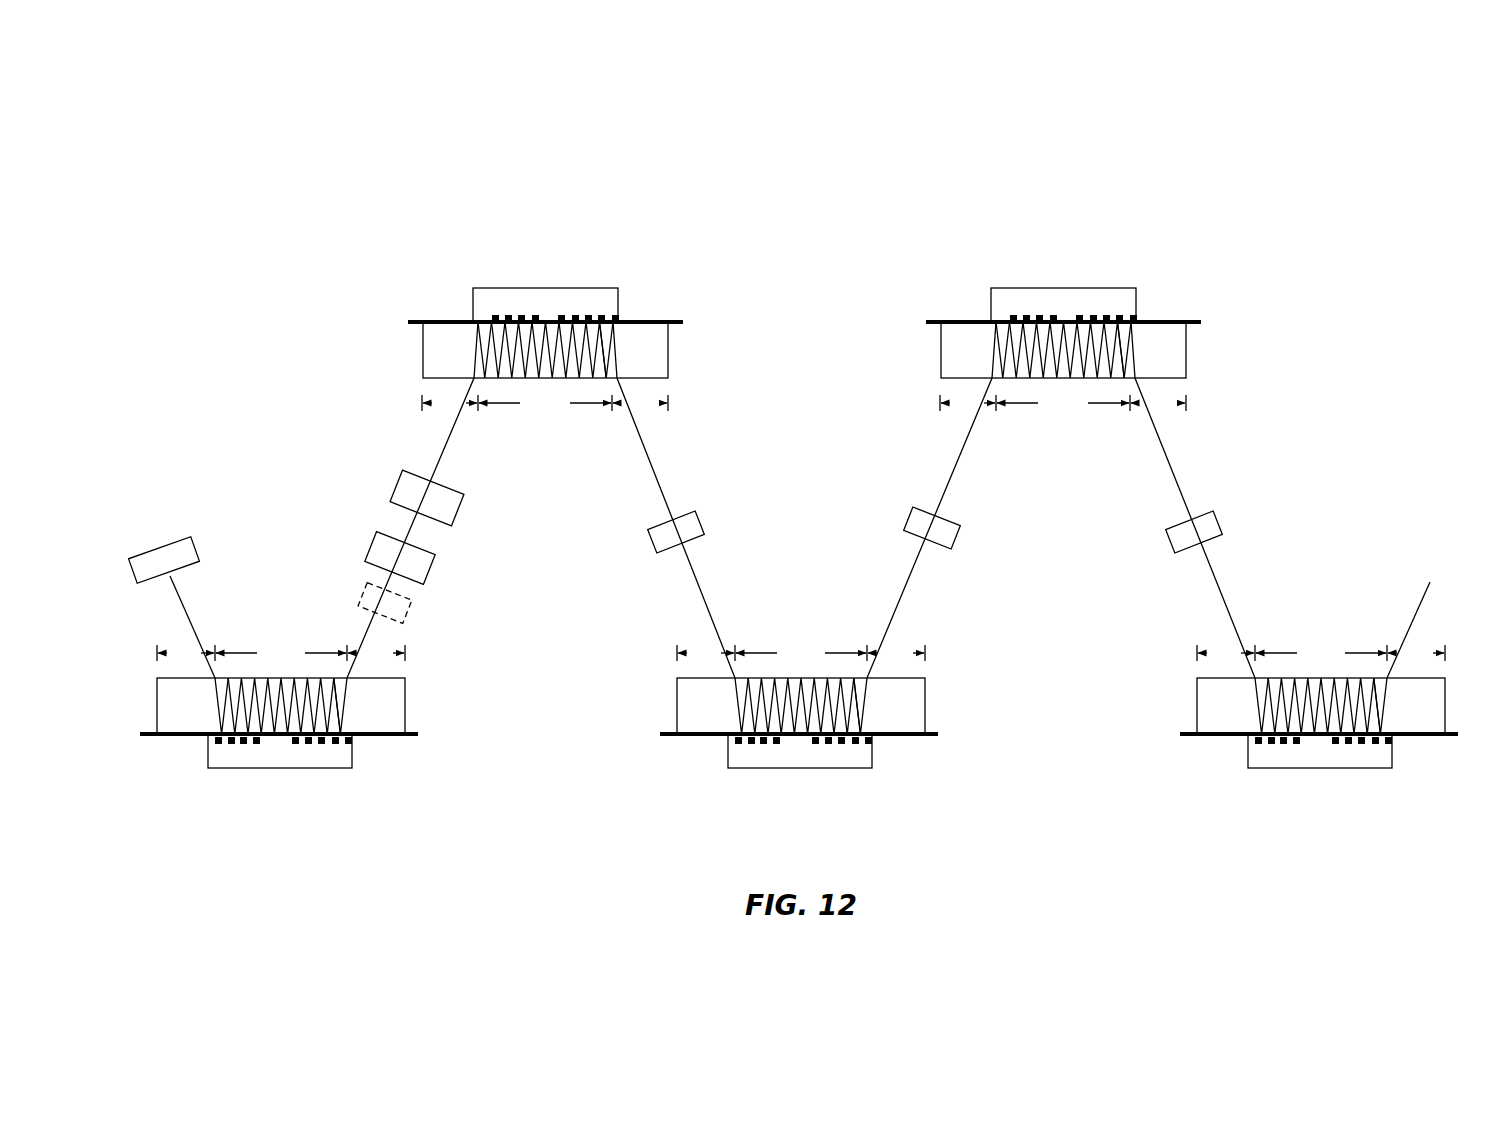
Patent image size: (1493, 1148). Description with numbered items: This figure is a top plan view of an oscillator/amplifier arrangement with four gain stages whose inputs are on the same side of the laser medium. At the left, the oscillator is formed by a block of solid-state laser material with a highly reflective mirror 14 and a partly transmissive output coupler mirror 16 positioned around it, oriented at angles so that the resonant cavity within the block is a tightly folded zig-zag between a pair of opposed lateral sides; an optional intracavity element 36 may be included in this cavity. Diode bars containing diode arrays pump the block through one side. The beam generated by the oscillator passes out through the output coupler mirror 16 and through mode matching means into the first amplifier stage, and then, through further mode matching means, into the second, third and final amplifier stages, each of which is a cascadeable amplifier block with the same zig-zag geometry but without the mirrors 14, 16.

The mirror 14 is at (130, 565).
The output coupler mirror 16 is at (372, 560).
The intracavity element 36 is at (410, 616).